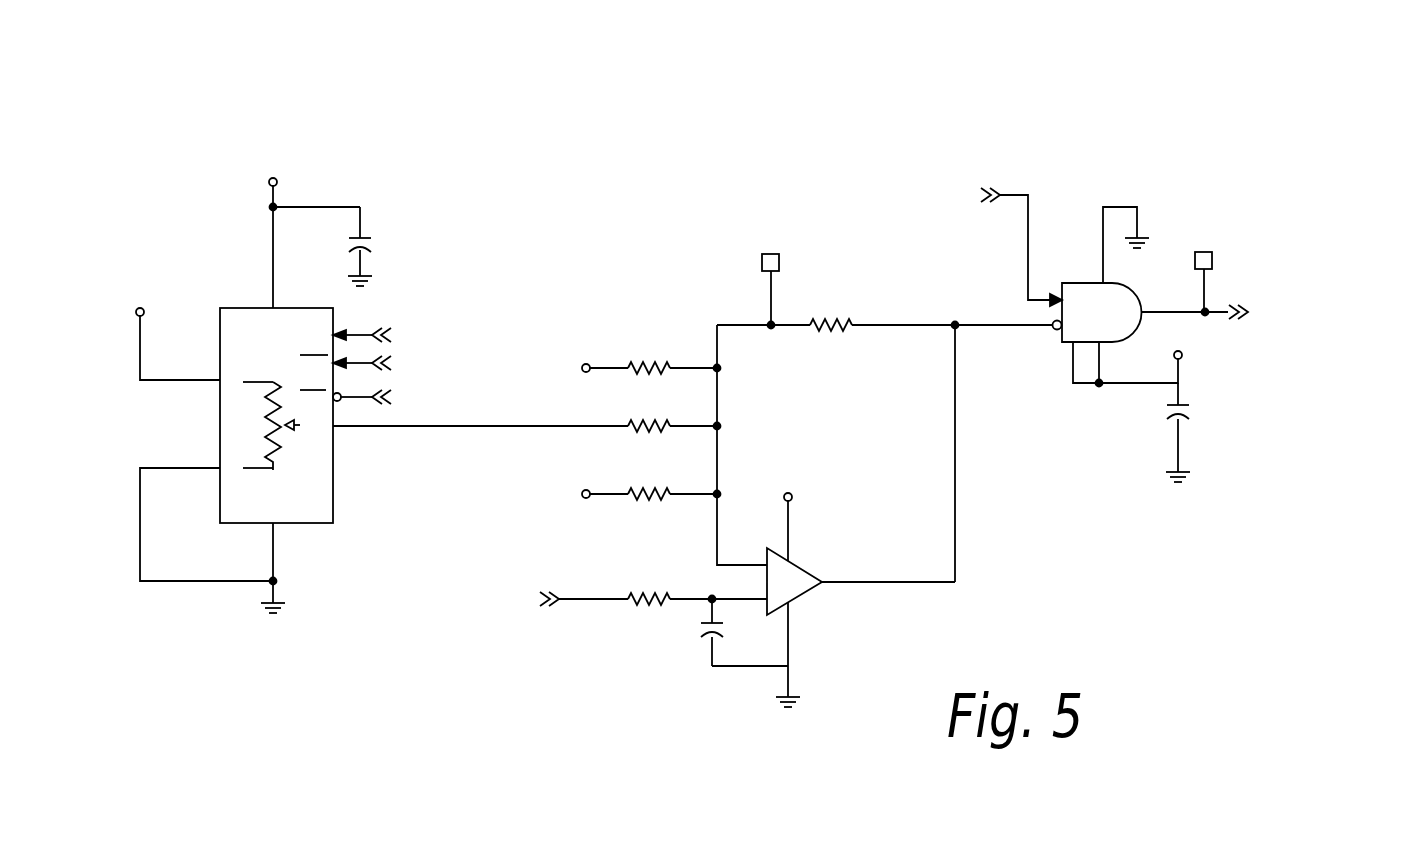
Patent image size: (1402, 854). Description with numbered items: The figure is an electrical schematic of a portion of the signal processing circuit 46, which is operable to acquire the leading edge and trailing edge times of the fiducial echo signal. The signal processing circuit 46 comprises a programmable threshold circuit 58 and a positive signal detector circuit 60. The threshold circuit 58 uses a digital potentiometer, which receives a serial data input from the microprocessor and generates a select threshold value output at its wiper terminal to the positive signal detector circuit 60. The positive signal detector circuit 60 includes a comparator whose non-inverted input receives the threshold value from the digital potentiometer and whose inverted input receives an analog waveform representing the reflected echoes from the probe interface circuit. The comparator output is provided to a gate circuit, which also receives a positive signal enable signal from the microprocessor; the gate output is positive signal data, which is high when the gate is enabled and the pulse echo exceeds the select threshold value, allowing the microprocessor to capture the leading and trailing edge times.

The signal processing circuit 46 is at (918, 127).
The programmable threshold circuit 58 is at (393, 226).
The positive signal detector circuit 60 is at (990, 168).